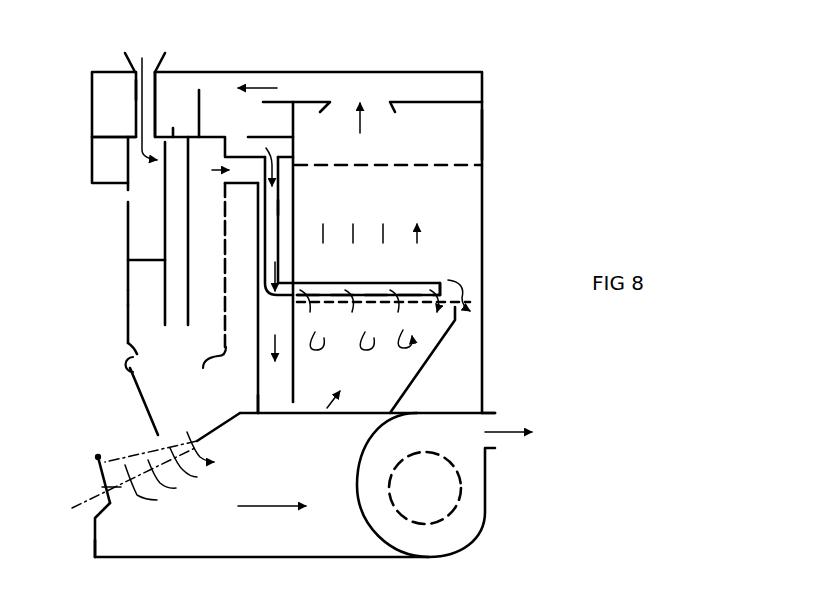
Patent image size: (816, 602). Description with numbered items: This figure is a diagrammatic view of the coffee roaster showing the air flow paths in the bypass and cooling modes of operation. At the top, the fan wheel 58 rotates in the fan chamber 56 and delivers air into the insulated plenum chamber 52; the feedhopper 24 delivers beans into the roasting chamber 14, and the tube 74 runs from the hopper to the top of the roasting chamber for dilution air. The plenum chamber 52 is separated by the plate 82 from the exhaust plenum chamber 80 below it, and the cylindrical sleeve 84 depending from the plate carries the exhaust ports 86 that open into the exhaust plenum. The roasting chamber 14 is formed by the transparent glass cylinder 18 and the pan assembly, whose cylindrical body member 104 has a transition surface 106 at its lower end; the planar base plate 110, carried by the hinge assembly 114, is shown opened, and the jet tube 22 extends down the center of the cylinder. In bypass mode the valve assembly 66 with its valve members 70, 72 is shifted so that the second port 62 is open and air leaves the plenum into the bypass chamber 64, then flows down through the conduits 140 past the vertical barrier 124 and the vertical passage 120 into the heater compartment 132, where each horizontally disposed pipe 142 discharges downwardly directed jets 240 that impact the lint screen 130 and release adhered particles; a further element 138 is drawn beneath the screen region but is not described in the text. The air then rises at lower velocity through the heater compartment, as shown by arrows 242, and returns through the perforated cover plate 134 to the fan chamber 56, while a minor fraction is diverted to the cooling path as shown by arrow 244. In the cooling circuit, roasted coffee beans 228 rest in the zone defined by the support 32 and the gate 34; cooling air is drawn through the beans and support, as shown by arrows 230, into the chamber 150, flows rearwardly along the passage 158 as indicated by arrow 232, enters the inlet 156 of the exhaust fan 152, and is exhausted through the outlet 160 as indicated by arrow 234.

The coffee roasting chamber 14 is at (126, 297).
The transparent glass cylinder 18 is at (128, 244).
The tube 22 is at (128, 262).
The feedhopper 24 is at (132, 70).
The support 32 is at (193, 443).
The gate 34 is at (98, 475).
The plenum chamber 52 is at (127, 113).
The fan chamber 56 is at (458, 141).
The fan wheel 58 is at (408, 96).
The second port 62 is at (256, 150).
The bypass chamber 64 is at (276, 140).
The valve assembly 66 is at (190, 116).
The valve member 70 is at (173, 128).
The valve member 72 is at (199, 90).
The tube 74 is at (135, 92).
The exhaust plenum chamber 80 is at (247, 170).
The plate 82 is at (100, 137).
The cylindrical stainless steel sleeve 84 is at (128, 190).
The exhaust ports 86 is at (226, 178).
The cylindrical body member 104 is at (128, 345).
The transition surface 106 is at (206, 370).
The planar base plate 110 is at (140, 401).
The hinge assembly 114 is at (118, 365).
The vertical passage 120 is at (283, 205).
The vertical barrier 124 is at (295, 353).
The lint screen 130 is at (327, 310).
The heater compartment 132 is at (467, 223).
The perforated cover plate 134 is at (448, 165).
The screen 138 is at (473, 312).
The conduits 140 is at (272, 240).
The horizontally disposed pipe 142 is at (427, 283).
The chamber 150 is at (208, 528).
The exhaust fan 152 is at (455, 537).
The inlet 156 is at (465, 503).
The passage 158 is at (328, 476).
The outlet 160 is at (495, 418).
The roasted coffee beans 228 is at (117, 489).
The arrows 230 is at (140, 497).
The arrow 232 is at (267, 506).
The arrow 234 is at (507, 434).
The downwardly directed jets 240 is at (347, 290).
The arrows 242 is at (368, 352).
The arrow 244 is at (465, 288).